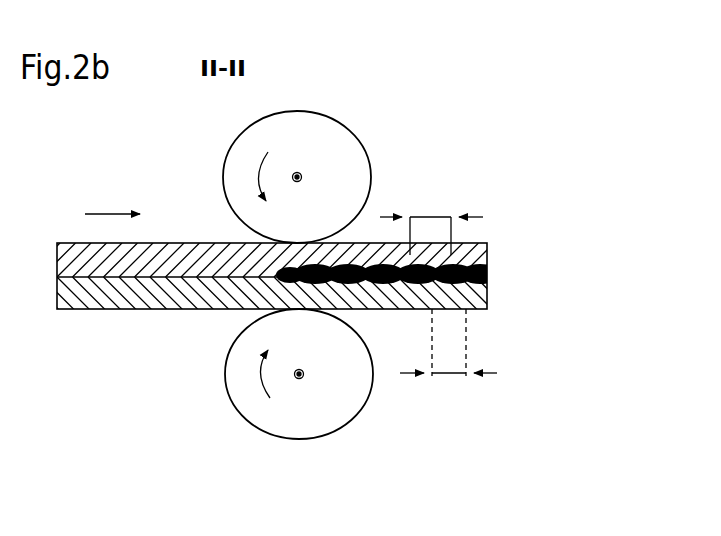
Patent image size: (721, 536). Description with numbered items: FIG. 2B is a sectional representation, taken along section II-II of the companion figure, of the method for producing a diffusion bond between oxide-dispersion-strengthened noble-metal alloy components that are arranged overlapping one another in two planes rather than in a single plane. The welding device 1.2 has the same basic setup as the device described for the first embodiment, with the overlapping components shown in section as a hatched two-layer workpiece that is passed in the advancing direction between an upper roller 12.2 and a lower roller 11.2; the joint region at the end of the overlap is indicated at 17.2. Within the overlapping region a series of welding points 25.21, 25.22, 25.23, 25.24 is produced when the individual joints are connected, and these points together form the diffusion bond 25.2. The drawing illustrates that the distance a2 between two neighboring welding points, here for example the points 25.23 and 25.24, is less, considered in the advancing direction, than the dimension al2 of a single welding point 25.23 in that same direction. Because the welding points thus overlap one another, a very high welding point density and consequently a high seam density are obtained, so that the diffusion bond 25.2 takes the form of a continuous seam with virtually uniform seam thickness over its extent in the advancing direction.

The welding device 1.2 is at (350, 92).
The lower roller electrode 11.2 is at (333, 405).
The upper roller electrode 12.2 is at (347, 146).
The welded sheet joint 17.2 is at (488, 268).
The diffusion bond 25.2 is at (474, 262).
The welding point 25.21 is at (379, 288).
The welding point 25.22 is at (418, 298).
The welding point 25.23 is at (488, 307).
The welding point 25.24 is at (488, 275).
The distance between two neighboring welding points a2 is at (448, 356).
The dimension of a welding point al2 is at (431, 224).